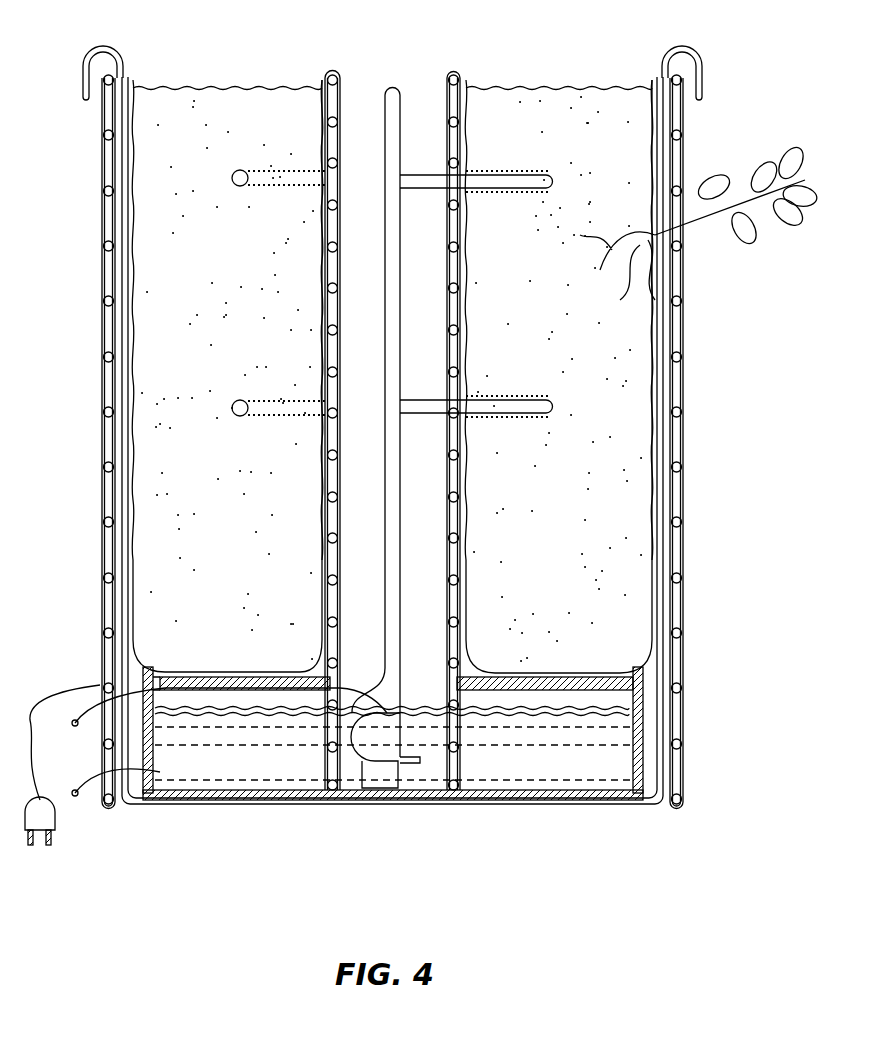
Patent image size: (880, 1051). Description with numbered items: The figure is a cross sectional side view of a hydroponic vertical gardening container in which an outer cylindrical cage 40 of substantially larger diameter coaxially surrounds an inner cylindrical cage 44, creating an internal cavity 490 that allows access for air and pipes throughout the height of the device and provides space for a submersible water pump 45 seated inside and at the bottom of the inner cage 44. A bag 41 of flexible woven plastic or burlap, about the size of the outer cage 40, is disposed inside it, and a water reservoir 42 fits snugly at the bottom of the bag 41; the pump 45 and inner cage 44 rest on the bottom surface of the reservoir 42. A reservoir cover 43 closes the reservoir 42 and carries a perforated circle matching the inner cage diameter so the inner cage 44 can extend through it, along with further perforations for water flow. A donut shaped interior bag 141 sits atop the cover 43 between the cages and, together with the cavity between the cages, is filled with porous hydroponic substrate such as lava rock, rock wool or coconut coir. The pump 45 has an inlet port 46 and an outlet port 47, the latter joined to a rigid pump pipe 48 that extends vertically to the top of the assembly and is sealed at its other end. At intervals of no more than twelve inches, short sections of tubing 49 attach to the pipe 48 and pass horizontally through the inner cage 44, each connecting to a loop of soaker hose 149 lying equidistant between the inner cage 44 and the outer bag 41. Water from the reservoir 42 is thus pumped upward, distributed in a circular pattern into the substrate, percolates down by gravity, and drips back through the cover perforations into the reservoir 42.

The outer cylindrical cage 40 is at (439, 469).
The bag 41 is at (95, 50).
The water reservoir 42 is at (195, 800).
The reservoir cover 43 is at (600, 800).
The inner cylindrical cage 44 is at (325, 490).
The submersible water pump 45 is at (385, 775).
The inlet port 46 is at (410, 763).
The outlet port 47 is at (298, 810).
The rigid pump pipe 48 is at (393, 137).
The short sections of tubing 49 is at (473, 172).
The planting chamber 490 is at (367, 107).
The interior bag 141 is at (130, 78).
The soaker hose 149 is at (240, 405).